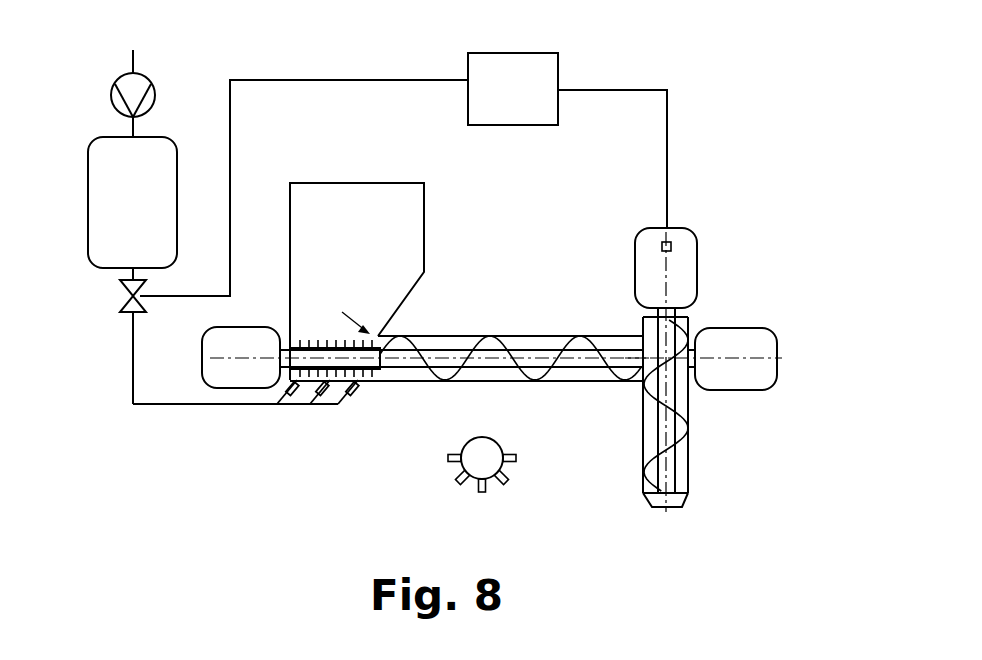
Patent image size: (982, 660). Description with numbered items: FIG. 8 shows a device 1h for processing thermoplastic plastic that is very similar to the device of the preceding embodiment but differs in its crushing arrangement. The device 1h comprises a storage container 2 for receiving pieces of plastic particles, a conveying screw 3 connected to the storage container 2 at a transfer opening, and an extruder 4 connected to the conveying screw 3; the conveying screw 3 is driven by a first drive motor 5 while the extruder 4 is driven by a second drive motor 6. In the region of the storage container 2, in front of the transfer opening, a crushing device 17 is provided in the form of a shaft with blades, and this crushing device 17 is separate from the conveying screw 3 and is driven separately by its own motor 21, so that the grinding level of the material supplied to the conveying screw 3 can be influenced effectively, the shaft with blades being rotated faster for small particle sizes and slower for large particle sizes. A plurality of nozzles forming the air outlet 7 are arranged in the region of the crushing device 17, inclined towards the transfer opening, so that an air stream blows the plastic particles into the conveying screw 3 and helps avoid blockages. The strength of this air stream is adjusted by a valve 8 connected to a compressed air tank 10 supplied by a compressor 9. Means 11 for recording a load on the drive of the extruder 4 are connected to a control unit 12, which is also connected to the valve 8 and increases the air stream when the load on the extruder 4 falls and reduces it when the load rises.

The device 1h is at (772, 54).
The storage container 2 is at (413, 233).
The conveying screw 3 is at (493, 338).
The extruder 4 is at (675, 452).
The first drive motor 5 is at (738, 375).
The second drive motor 6 is at (682, 268).
The air outlet 7 is at (363, 387).
The valve 8 is at (128, 308).
The compressor 9 is at (127, 83).
The compressed air tank 10 is at (100, 184).
The means for recording a load 11 is at (671, 241).
The control unit 12 is at (547, 78).
The crushing device 17 is at (307, 343).
The motor 21 is at (213, 370).